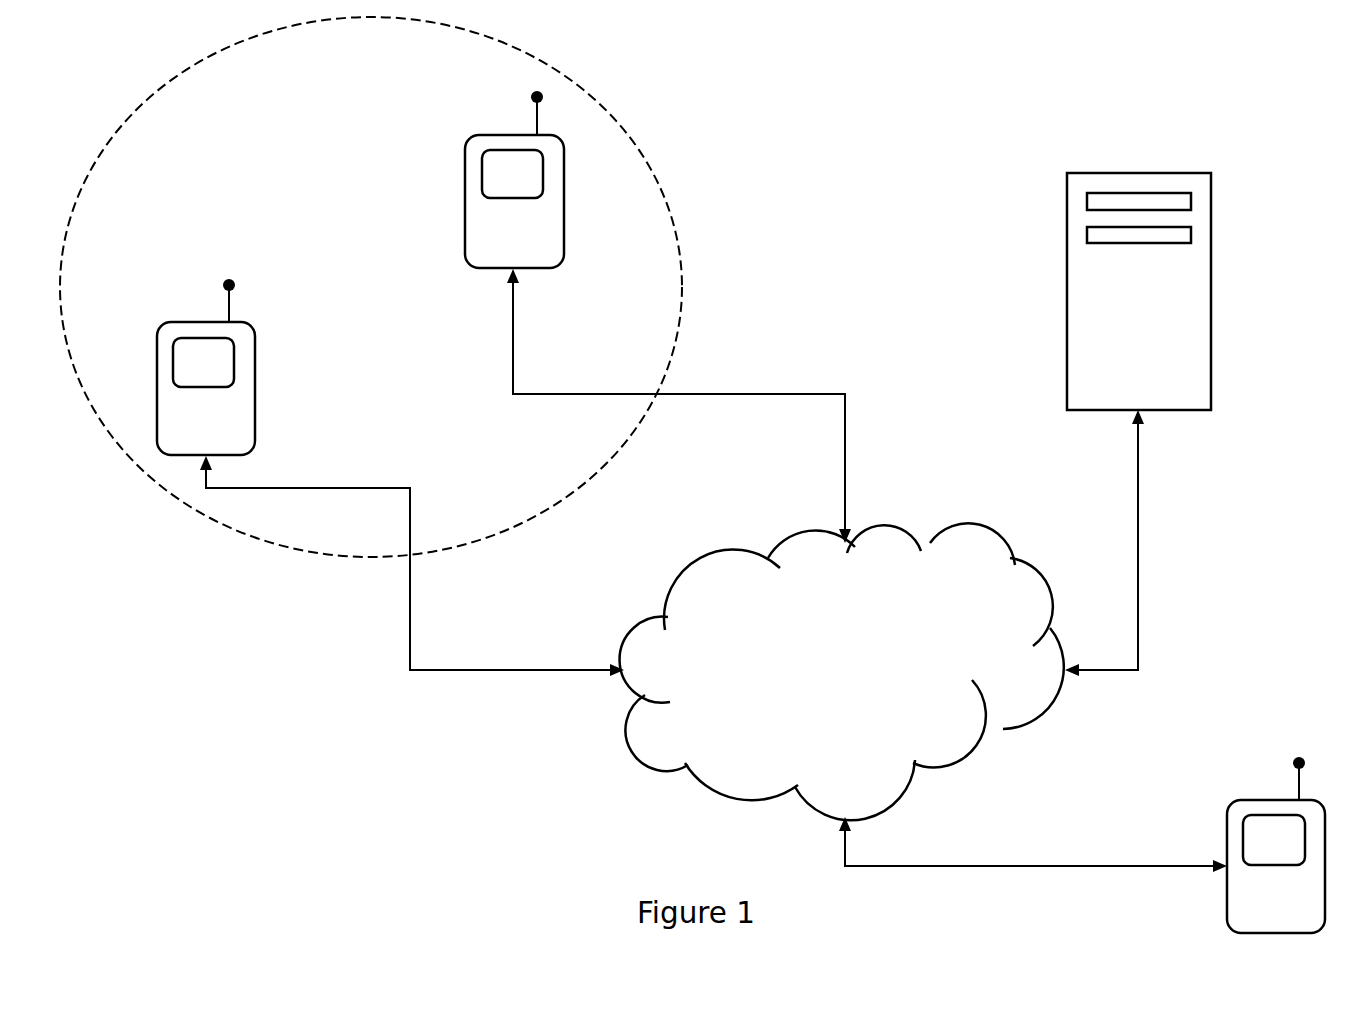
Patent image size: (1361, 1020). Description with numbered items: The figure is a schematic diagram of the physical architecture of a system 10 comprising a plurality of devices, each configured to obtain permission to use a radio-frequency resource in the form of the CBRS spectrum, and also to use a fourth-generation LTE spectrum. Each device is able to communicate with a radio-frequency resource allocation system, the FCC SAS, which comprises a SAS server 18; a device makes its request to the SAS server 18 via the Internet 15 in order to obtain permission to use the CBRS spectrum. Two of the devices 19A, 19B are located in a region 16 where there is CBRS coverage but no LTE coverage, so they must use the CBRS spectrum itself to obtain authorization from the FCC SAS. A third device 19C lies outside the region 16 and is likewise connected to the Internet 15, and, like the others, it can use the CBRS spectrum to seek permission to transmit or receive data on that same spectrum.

The system 10 is at (1321, 143).
The Internet 15 is at (842, 671).
The region 16 is at (357, 303).
The SAS server 18 is at (1123, 357).
The device 19A is at (181, 425).
The device 19B is at (489, 237).
The device 19C is at (1250, 902).